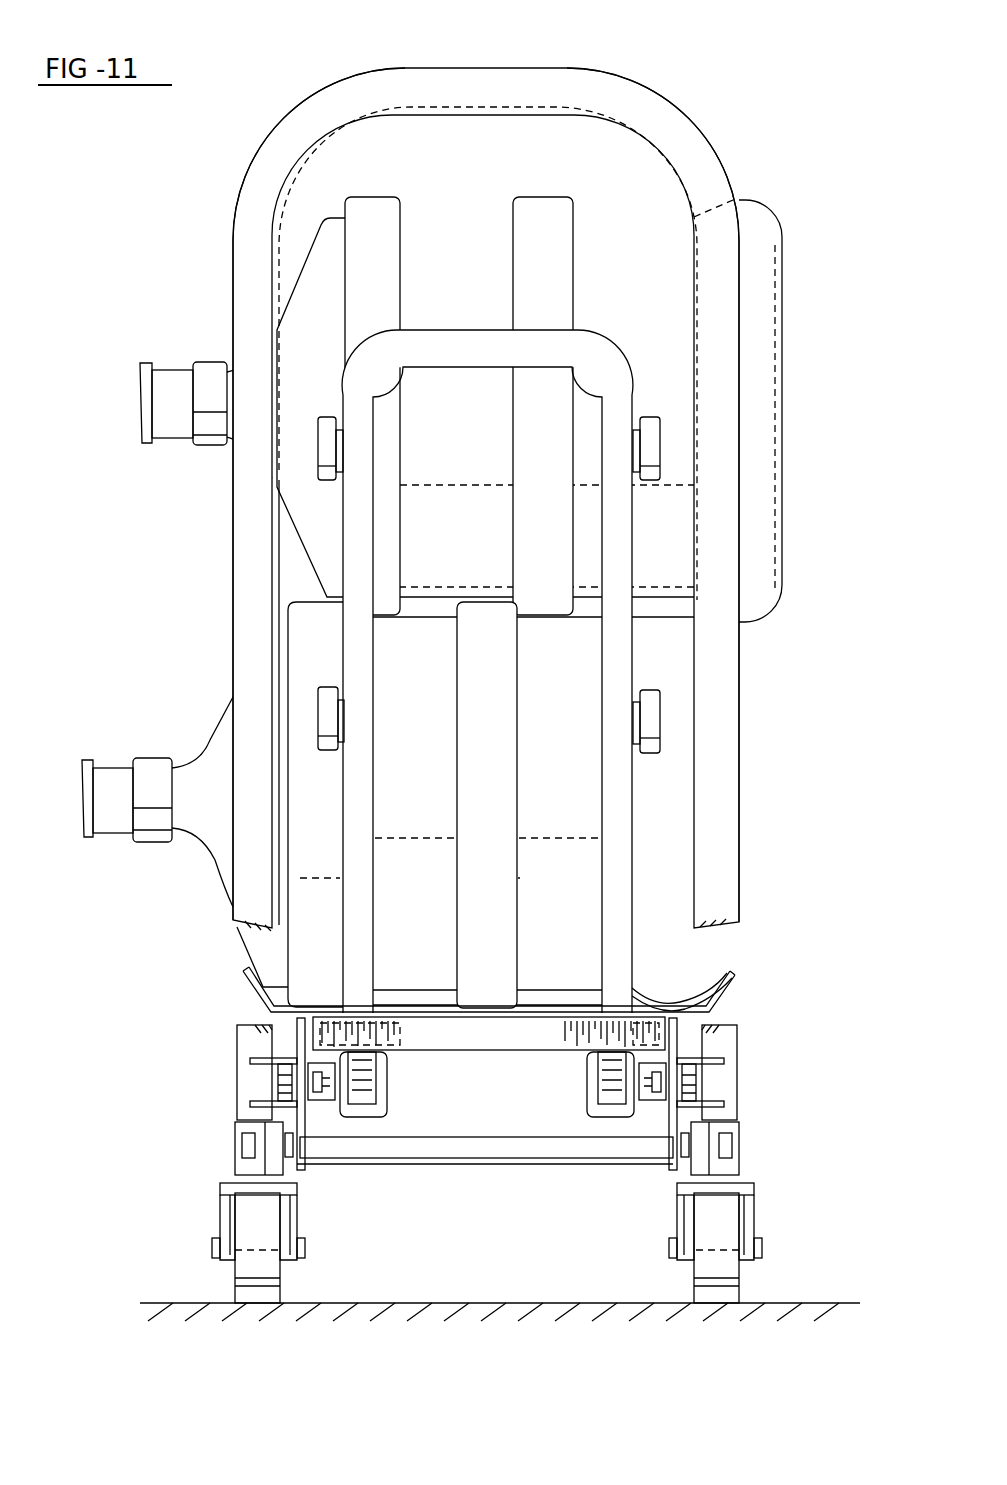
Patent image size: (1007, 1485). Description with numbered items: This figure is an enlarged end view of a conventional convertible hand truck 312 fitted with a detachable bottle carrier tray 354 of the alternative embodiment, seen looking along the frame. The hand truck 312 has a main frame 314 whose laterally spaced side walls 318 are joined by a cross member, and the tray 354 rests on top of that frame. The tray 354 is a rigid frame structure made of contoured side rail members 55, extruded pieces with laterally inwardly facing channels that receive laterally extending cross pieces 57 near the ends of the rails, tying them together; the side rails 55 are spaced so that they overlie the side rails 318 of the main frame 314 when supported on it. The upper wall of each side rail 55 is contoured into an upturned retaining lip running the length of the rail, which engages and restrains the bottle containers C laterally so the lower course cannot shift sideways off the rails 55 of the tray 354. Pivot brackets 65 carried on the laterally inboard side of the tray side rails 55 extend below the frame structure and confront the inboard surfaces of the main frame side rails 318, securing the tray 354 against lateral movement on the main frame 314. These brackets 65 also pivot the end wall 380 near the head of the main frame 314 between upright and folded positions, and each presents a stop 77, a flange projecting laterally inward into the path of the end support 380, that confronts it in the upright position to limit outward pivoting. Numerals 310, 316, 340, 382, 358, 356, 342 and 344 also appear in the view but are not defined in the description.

The chair assembly 310 is at (732, 122).
The convertible hand truck 312 is at (441, 68).
The frame tube side portion 316 is at (605, 84).
The frame upright 340 is at (242, 262).
The end wall 380 is at (623, 356).
The handle legs 382 is at (373, 722).
The bottle containers C is at (763, 212).
The bottle carrier tray 354 is at (742, 968).
The seat cushion 358 is at (677, 1007).
The side rail members 55 is at (297, 1031).
The cross pieces 57 is at (503, 1043).
The stop 77 is at (388, 1084).
The fastener 356 is at (652, 1058).
The pivot brackets 65 is at (325, 1106).
The side walls 318 is at (307, 1105).
The main frame 314 is at (322, 1104).
The caster mount 342 is at (240, 1166).
The caster wheel 344 is at (240, 1276).